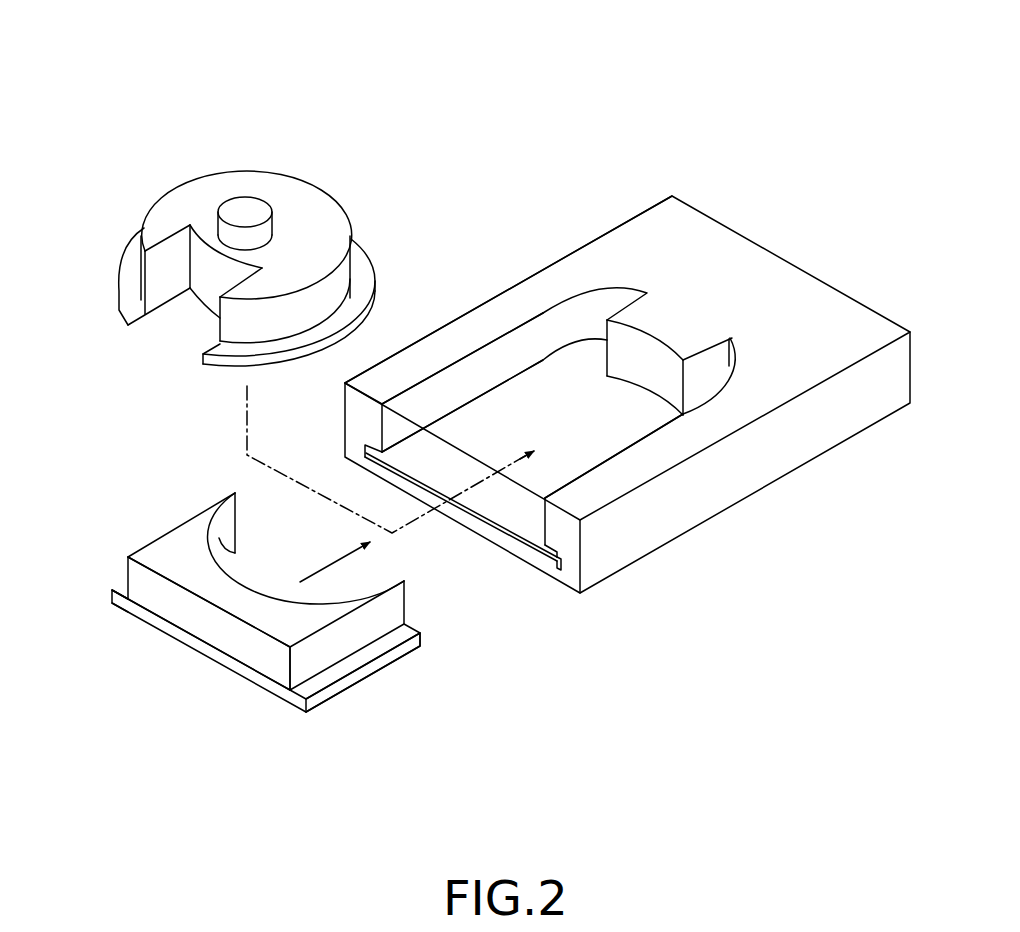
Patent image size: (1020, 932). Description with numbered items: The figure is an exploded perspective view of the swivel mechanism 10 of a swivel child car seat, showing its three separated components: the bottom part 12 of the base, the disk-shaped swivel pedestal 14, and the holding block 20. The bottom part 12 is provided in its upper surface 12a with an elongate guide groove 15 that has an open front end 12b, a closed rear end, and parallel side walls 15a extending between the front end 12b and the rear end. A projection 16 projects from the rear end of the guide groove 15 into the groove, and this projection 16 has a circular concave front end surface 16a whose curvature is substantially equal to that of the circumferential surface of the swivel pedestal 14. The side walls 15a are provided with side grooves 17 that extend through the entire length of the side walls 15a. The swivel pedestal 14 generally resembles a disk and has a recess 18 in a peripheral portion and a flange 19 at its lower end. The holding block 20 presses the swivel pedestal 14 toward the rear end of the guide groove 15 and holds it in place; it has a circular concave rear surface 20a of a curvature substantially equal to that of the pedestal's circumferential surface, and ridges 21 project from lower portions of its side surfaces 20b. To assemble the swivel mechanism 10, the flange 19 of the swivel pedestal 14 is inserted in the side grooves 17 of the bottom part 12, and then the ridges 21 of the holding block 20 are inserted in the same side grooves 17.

The swivel mechanism 10 is at (700, 128).
The bottom part 12 is at (752, 514).
The upper surface 12a is at (543, 290).
The front end 12b is at (537, 553).
The swivel pedestal 14 is at (264, 159).
The guide groove 15 is at (545, 392).
The side walls 15a is at (455, 388).
The projection 16 is at (673, 326).
The circular concave front end surface 16a is at (650, 378).
The side grooves 17 is at (364, 456).
The recess 18 is at (190, 312).
The flange 19 is at (128, 265).
The holding block 20 is at (233, 690).
The circular concave rear surface 20a is at (232, 532).
The side surfaces 20b is at (128, 583).
The ridges 21 is at (112, 592).